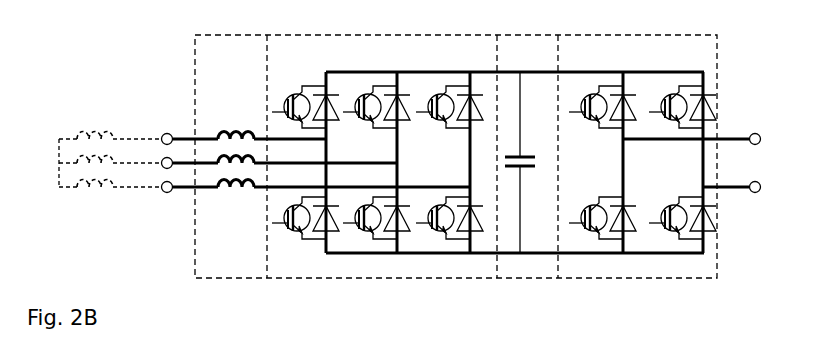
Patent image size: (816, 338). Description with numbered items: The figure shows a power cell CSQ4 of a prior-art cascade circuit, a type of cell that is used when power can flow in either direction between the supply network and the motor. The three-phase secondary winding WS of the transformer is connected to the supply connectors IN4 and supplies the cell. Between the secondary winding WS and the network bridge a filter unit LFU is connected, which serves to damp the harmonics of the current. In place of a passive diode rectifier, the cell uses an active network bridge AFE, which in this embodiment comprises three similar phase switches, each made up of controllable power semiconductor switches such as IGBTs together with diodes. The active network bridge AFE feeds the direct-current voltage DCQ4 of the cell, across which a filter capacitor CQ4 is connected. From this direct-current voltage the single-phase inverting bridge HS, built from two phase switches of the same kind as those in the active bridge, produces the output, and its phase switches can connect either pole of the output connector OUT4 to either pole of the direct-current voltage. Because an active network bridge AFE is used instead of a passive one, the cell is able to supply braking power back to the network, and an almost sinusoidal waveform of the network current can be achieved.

The power cell CSQ4 is at (456, 145).
The filter unit LFU is at (322, 156).
The supply connectors IN4 is at (163, 153).
The three-phase secondary winding WS is at (110, 145).
The active network bridge AFE is at (488, 156).
The direct-current voltage DCQ4 is at (531, 156).
The filter capacitor CQ4 is at (527, 162).
The single-phase inverting bridge HS is at (642, 150).
The output connector OUT4 is at (699, 153).